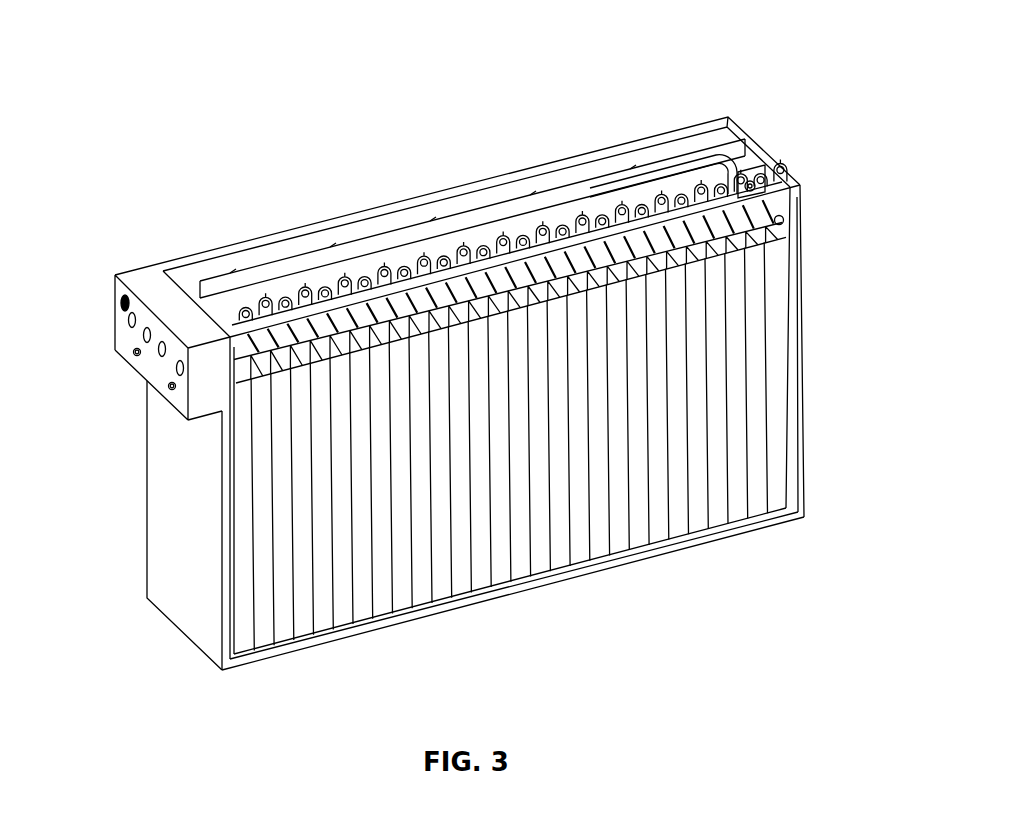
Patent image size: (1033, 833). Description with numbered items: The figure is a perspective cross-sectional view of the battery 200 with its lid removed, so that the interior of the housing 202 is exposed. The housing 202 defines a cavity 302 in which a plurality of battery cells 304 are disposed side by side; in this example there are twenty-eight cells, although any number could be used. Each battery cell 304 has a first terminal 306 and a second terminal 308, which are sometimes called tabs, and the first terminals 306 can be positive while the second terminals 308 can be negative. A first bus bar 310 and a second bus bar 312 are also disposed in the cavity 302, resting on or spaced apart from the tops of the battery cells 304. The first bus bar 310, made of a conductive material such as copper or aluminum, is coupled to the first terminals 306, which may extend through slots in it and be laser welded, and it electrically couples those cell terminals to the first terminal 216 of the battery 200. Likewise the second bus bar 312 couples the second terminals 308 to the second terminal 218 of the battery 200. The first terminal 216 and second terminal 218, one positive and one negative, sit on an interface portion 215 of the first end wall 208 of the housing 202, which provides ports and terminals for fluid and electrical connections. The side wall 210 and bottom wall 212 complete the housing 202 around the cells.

The battery 200 is at (174, 84).
The housing 202 is at (652, 134).
The first end wall 208 is at (147, 550).
The side wall 210 is at (812, 392).
The bottom wall 212 is at (620, 582).
The interface portion 215 is at (79, 293).
The first terminal 216 is at (170, 389).
The second terminal 218 is at (131, 353).
The cavity 302 is at (595, 157).
The battery cells 304 is at (247, 583).
The first terminal 306 is at (281, 318).
The second terminal 308 is at (256, 305).
The first bus bar 310 is at (413, 300).
The second bus bar 312 is at (357, 262).